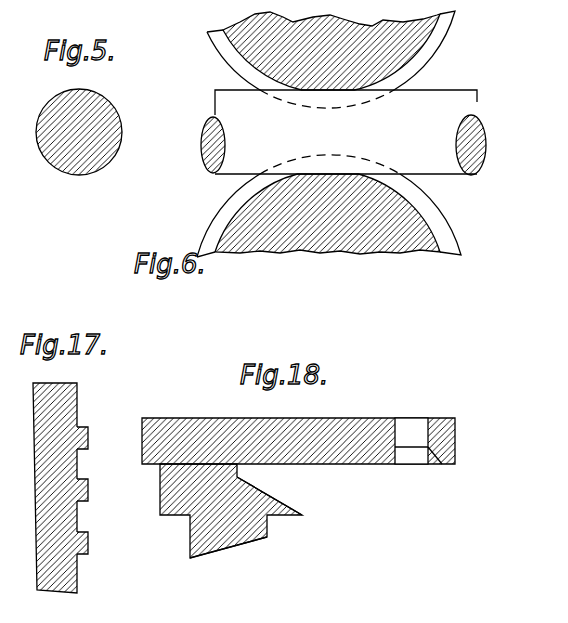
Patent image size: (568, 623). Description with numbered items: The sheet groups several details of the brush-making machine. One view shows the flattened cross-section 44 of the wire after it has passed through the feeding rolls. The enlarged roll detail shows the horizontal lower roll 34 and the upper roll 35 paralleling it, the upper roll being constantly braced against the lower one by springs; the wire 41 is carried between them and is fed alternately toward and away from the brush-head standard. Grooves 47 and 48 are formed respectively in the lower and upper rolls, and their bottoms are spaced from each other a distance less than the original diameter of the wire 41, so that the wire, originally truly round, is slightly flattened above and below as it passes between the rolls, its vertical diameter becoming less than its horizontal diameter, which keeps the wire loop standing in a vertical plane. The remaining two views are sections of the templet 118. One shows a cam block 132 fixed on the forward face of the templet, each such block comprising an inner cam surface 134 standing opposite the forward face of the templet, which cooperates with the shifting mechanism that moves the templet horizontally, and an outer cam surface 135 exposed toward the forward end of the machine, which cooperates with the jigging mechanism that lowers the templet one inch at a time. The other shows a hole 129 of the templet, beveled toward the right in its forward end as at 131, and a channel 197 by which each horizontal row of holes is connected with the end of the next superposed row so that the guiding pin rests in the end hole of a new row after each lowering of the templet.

In FIG. 6, the lower roll 34 is at (270, 236).
In FIG. 6, the upper roll 35 is at (252, 28).
In FIG. 6, the wire 41 is at (435, 97).
In FIG. 5, the flattened wire cross-section 44 is at (104, 97).
In FIG. 6, the flattened wire cross-section 44 is at (201, 146).
In FIG. 6, the groove of lower roll 47 is at (217, 222).
In FIG. 6, the groove of upper roll 48 is at (233, 52).
In FIG. 18, the templet 118 is at (325, 432).
In FIG. 18, the hole of templet 129 is at (413, 430).
In FIG. 18, the bevel 131 is at (429, 465).
In FIG. 18, the cam block 132 is at (177, 493).
In FIG. 18, the inner cam surface 134 is at (270, 493).
In FIG. 17, the outer cam surface 135 is at (88, 432).
In FIG. 18, the outer cam surface 135 is at (257, 538).
In FIG. 18, the channel 197 is at (425, 453).